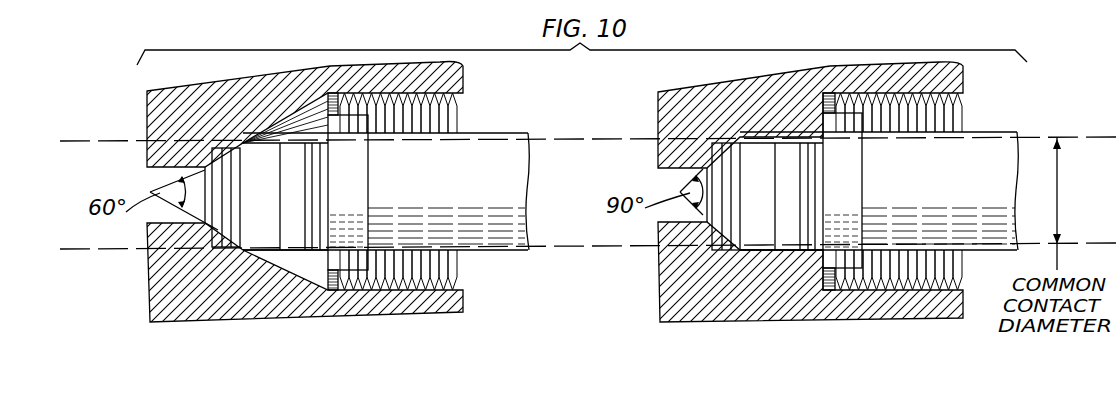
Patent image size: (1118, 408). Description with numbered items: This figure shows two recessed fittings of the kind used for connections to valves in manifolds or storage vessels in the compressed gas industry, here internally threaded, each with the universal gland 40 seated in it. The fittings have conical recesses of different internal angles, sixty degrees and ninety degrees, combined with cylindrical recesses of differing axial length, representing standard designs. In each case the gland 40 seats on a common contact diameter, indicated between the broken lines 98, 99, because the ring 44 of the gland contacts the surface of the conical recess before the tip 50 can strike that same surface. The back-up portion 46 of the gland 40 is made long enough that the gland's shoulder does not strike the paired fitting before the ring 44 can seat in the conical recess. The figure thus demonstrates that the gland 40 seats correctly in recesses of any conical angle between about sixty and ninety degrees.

The universal gland 40 is at (498, 131).
The ring 44 is at (263, 225).
The back-up portion 46 is at (312, 176).
The tip 50 is at (222, 188).
The broken line 98 is at (553, 139).
The broken line 99 is at (558, 250).